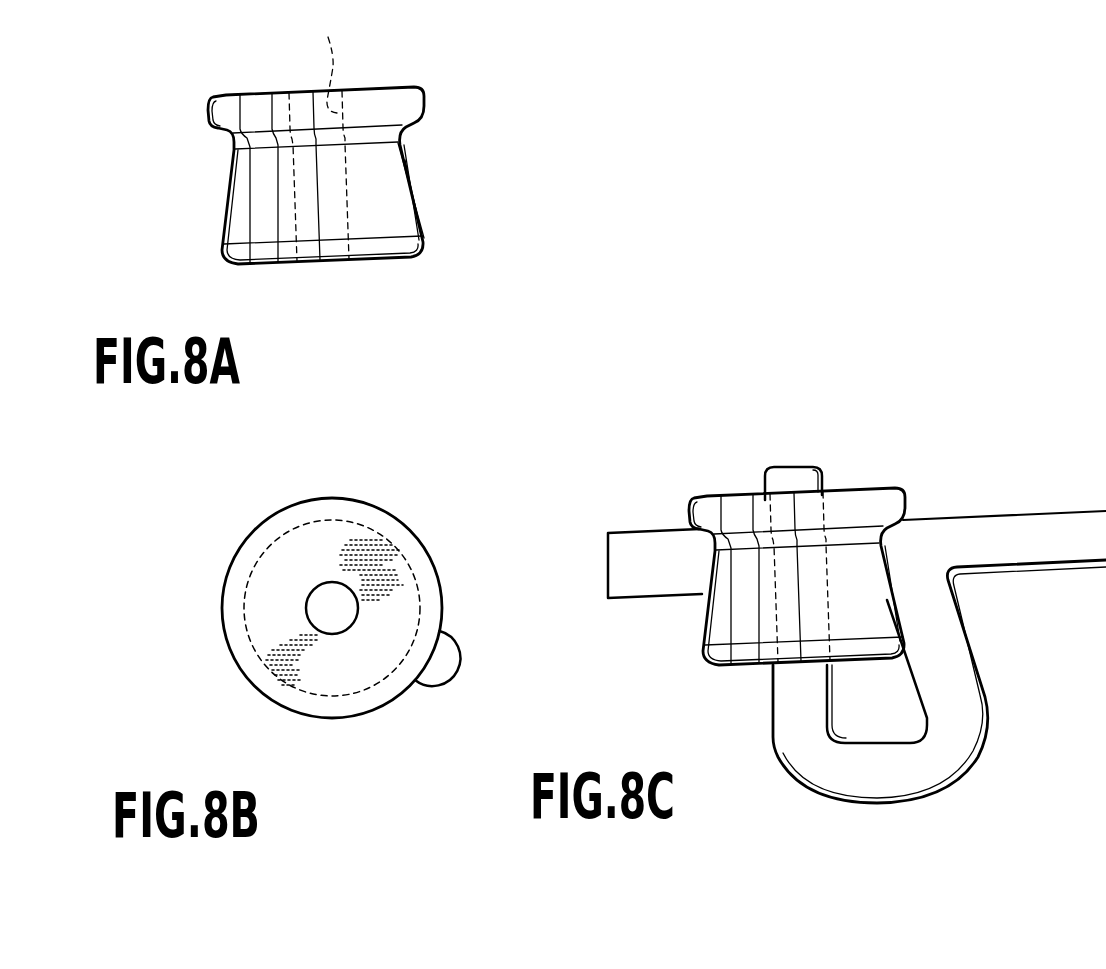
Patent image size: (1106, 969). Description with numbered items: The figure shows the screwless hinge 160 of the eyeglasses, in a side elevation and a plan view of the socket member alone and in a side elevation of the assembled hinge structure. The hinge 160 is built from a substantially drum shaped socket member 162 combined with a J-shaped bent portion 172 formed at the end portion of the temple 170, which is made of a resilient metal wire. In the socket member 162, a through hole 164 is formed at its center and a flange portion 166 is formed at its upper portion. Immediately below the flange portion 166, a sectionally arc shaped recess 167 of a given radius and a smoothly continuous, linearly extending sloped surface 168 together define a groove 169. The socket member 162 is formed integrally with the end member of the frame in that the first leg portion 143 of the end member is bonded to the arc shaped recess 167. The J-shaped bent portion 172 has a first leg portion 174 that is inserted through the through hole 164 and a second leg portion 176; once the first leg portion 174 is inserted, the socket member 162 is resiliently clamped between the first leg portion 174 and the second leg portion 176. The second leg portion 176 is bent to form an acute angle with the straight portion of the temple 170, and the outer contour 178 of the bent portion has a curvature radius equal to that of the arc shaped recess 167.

In FIG. 8C, the first leg portion of the end member 143 is at (662, 545).
In FIG. 8C, the screwless hinge 160 is at (855, 577).
In FIG. 8A, the socket member 162 is at (207, 262).
In FIG. 8B, the socket member 162 is at (385, 495).
In FIG. 8C, the socket member 162 is at (697, 630).
In FIG. 8A, the through hole 164 is at (333, 60).
In FIG. 8B, the through hole 164 is at (334, 580).
In FIG. 8A, the flange portion 166 is at (420, 100).
In FIG. 8B, the flange portion 166 is at (410, 543).
In FIG. 8A, the arc shaped recess 167 is at (403, 133).
In FIG. 8A, the sloped surface 168 is at (423, 223).
In FIG. 8A, the groove 169 is at (498, 115).
In FIG. 8C, the temple 170 is at (1005, 525).
In FIG. 8C, the J-shaped bent portion 172 is at (904, 683).
In FIG. 8C, the first leg portion 174 is at (777, 697).
In FIG. 8C, the second leg portion 176 is at (963, 660).
In FIG. 8C, the outer contour 178 is at (875, 515).